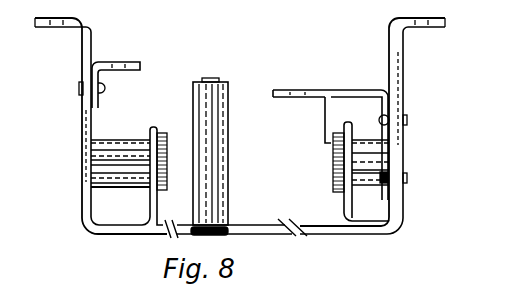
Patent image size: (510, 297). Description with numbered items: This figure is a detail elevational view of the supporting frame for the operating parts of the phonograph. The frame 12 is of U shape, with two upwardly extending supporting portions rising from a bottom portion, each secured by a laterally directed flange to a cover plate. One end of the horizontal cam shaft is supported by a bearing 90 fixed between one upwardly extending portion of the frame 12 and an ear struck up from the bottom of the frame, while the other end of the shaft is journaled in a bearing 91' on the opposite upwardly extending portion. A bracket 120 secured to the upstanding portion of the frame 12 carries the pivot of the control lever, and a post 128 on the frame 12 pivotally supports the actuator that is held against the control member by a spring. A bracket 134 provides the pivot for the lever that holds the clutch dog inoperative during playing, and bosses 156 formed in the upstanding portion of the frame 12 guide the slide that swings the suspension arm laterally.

The frame 12 is at (89, 47).
The bracket 134 is at (128, 64).
The roller assembly 91' is at (135, 143).
The post 128 is at (221, 110).
The bosses 156 is at (405, 72).
The bracket 120 is at (313, 90).
The bearing 90 is at (368, 155).